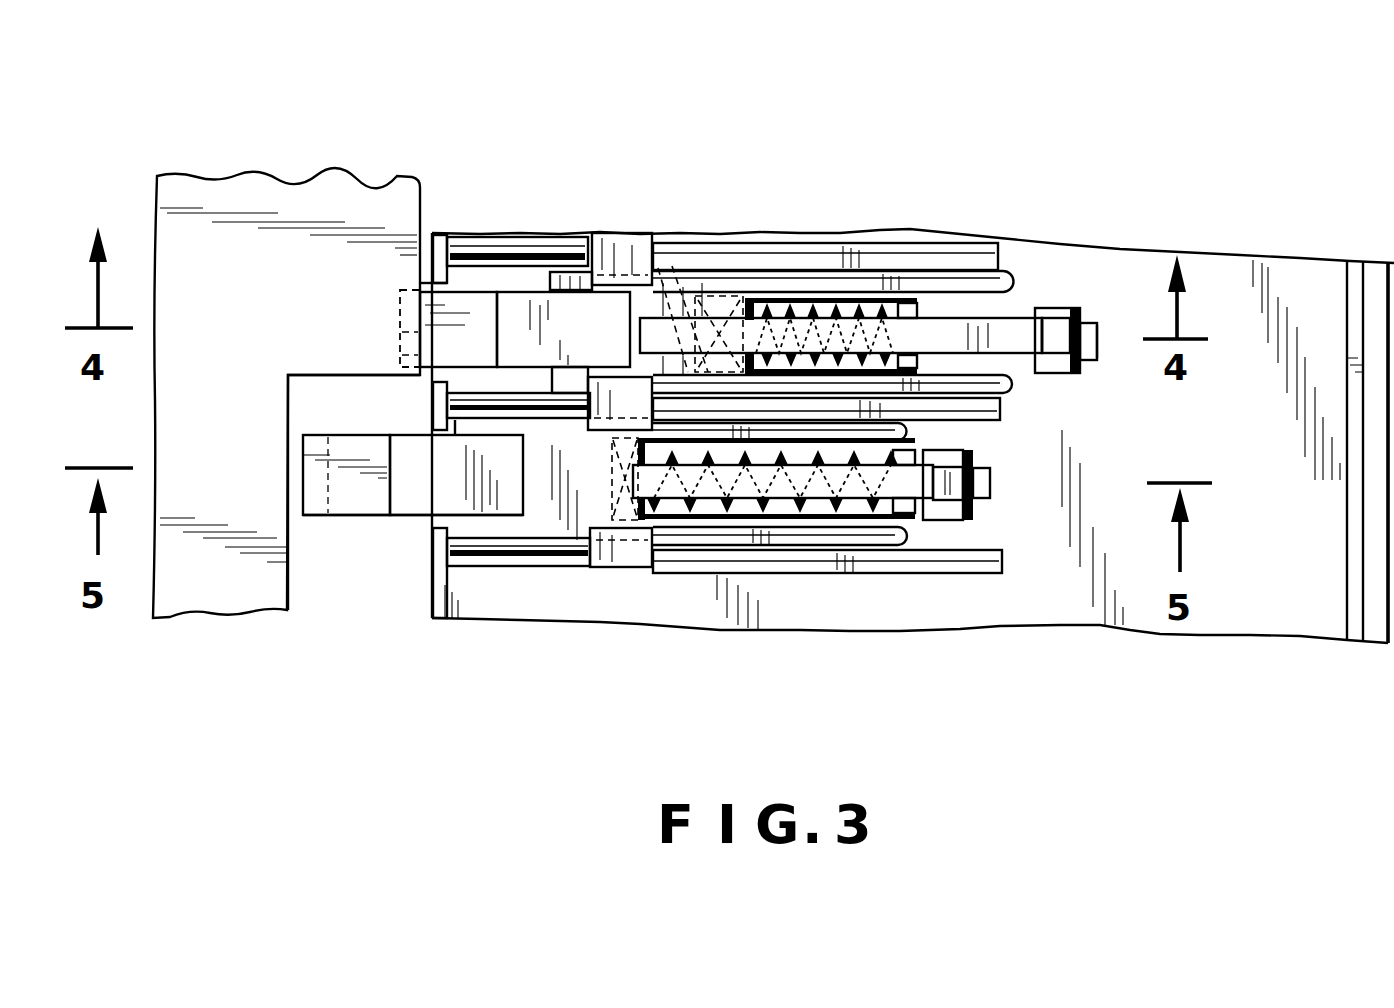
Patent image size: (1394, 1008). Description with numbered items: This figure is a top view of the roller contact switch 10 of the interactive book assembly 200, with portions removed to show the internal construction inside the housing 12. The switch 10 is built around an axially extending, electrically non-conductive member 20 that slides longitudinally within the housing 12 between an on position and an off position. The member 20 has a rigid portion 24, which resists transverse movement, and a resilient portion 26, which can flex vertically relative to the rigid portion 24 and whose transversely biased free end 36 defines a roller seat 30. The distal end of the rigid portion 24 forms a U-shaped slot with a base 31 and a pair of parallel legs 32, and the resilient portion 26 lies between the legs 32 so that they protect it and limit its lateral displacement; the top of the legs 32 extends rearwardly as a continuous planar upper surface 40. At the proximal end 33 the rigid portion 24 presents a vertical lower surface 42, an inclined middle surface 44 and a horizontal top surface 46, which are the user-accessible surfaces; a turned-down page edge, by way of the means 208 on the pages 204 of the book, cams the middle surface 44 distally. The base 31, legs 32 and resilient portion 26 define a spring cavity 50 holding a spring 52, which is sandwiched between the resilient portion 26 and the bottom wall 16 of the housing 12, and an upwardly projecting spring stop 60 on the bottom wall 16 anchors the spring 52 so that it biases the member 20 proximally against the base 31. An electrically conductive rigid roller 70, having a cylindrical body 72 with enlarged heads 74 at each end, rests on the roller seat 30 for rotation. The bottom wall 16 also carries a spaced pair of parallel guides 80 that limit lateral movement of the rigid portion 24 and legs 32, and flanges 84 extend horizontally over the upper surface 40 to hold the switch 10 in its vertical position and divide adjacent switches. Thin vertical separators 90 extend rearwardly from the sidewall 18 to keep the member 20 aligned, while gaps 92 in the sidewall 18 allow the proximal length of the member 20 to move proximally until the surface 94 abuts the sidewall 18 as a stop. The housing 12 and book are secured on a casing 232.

The roller contact switch 10 is at (381, 517).
The housing 12 is at (1190, 242).
The bottom wall 16 is at (1075, 598).
The sidewall 18 is at (438, 235).
The non-conductive member 20 is at (410, 245).
The rigid portion 24 is at (398, 296).
The resilient portion 26 is at (1003, 334).
The roller seat 30 is at (1112, 308).
The base 31 is at (673, 255).
The legs 32 is at (1015, 275).
The proximal end 33 is at (398, 352).
The free end 36 is at (1068, 357).
The upper surface 40 is at (718, 294).
The lower surface 42 is at (398, 323).
The middle surface 44 is at (480, 360).
The top surface 46 is at (615, 336).
The spring cavity 50 is at (870, 310).
The spring 52 is at (838, 297).
The spring stop 60 is at (910, 300).
The roller 70 is at (1053, 306).
The cylindrical body 72 is at (1090, 352).
The enlarged heads 74 is at (1076, 318).
The guides 80 is at (790, 258).
The flange 84 is at (632, 233).
The vertical separators 90 is at (497, 236).
The gaps 92 is at (418, 283).
The surface 94 is at (550, 274).
The book assembly 200 is at (270, 173).
The pages 204 is at (198, 587).
The means for moving a switch 208 is at (372, 589).
The casing 232 is at (1375, 630).